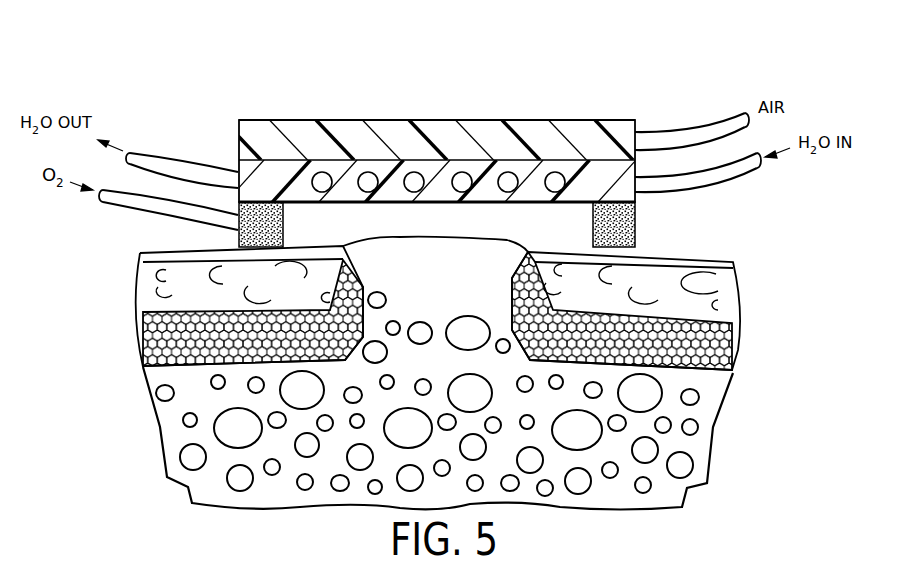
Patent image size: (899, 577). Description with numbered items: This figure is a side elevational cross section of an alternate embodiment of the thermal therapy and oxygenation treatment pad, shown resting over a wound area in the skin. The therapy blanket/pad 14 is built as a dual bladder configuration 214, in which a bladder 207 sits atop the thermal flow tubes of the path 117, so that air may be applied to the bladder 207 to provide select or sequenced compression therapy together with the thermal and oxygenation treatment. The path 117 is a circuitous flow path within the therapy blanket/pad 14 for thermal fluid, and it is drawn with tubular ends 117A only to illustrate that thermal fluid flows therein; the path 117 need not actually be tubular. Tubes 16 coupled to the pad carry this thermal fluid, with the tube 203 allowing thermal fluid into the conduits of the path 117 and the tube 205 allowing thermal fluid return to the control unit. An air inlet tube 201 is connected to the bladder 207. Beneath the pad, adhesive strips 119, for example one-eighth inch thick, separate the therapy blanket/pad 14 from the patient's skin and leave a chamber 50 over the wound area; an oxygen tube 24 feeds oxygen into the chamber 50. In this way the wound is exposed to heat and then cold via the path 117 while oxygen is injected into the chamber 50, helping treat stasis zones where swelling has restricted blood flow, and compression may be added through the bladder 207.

The therapy blanket/pad 14 is at (476, 66).
The tubes 16 is at (196, 145).
The oxygen tube 24 is at (116, 205).
The chamber 50 is at (392, 214).
The path 117 is at (348, 176).
The tubular ends 117A is at (556, 172).
The adhesive strips 119 is at (283, 232).
The air inlet tube 201 is at (695, 128).
The tube 203 is at (738, 172).
The tube 205 is at (137, 152).
The bladder 207 is at (497, 120).
The dual bladder configuration 214 is at (549, 112).